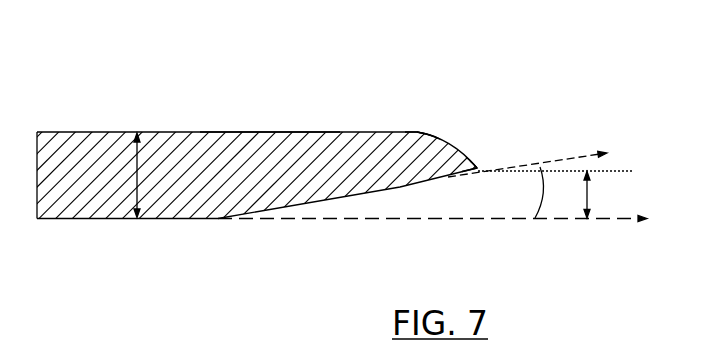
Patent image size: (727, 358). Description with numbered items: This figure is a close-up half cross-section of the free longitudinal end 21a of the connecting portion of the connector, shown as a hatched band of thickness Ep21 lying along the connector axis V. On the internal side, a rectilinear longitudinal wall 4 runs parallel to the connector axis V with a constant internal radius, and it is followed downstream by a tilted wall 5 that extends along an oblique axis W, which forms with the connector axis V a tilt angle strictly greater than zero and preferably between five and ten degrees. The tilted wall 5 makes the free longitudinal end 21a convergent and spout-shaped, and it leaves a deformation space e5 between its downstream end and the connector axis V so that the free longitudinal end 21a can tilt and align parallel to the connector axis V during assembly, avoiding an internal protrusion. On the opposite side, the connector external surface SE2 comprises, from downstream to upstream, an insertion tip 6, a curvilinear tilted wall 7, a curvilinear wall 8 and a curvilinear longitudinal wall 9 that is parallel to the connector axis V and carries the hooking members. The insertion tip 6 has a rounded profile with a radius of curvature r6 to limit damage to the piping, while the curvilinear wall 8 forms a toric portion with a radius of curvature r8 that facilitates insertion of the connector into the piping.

The free longitudinal end 21a is at (325, 58).
The connector external surface SE2 is at (265, 113).
The curvilinear longitudinal wall 9 is at (170, 132).
The rectilinear longitudinal wall 4 is at (162, 218).
The tilted wall 5 is at (313, 201).
The insertion tip 6 is at (490, 172).
The curvilinear tilted wall 7 is at (450, 147).
The curvilinear wall 8 is at (413, 132).
The radius of curvature r8 is at (411, 141).
The radius of curvature r6 is at (457, 165).
The thickness Ep21 is at (103, 175).
The deformation space e5 is at (555, 194).
The oblique axis W is at (541, 160).
The connector axis V is at (441, 218).